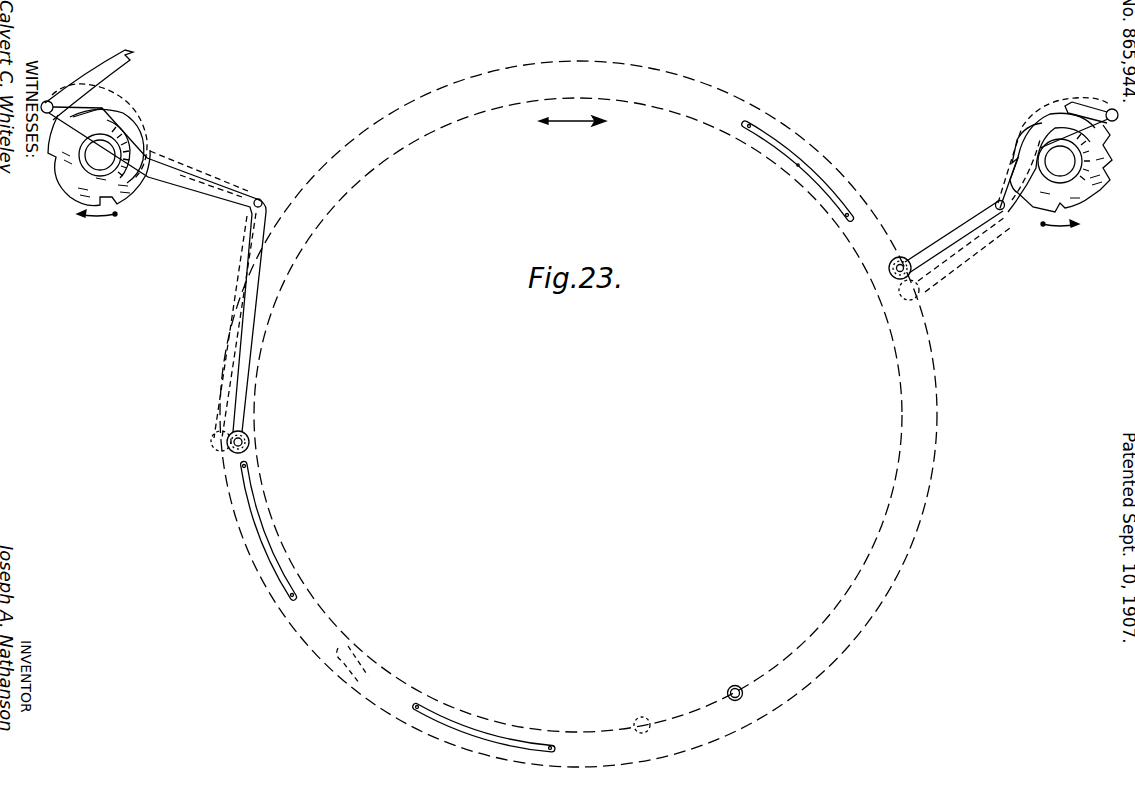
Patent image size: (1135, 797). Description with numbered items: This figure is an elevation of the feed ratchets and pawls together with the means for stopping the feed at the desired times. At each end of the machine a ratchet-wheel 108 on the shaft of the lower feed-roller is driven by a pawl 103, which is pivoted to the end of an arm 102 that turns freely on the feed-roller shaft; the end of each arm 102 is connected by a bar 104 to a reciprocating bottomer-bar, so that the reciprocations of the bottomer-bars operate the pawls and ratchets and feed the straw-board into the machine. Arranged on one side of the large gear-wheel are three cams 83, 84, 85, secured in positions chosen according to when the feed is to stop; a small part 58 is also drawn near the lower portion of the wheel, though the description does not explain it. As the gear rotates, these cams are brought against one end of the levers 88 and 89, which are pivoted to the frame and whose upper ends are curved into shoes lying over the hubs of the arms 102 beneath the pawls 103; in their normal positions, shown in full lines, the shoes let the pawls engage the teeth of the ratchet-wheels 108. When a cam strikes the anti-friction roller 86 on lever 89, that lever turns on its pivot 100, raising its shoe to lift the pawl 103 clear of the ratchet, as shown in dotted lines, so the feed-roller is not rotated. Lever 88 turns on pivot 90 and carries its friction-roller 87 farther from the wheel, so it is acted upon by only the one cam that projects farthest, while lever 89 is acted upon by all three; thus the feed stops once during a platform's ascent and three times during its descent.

The stop pin 58 is at (734, 683).
The cam 83 is at (812, 197).
The cam 84 is at (262, 522).
The cam 85 is at (480, 724).
The anti-friction roller 86 is at (895, 260).
The friction-roller 87 is at (251, 441).
The lever 88 is at (256, 245).
The lever 89 is at (975, 236).
The pivot 90 is at (263, 204).
The pivot 100 is at (997, 200).
The arm 102 is at (66, 140).
The pawl 103 is at (97, 112).
The bar 104 is at (133, 62).
The ratchet-wheel 108 is at (1101, 195).